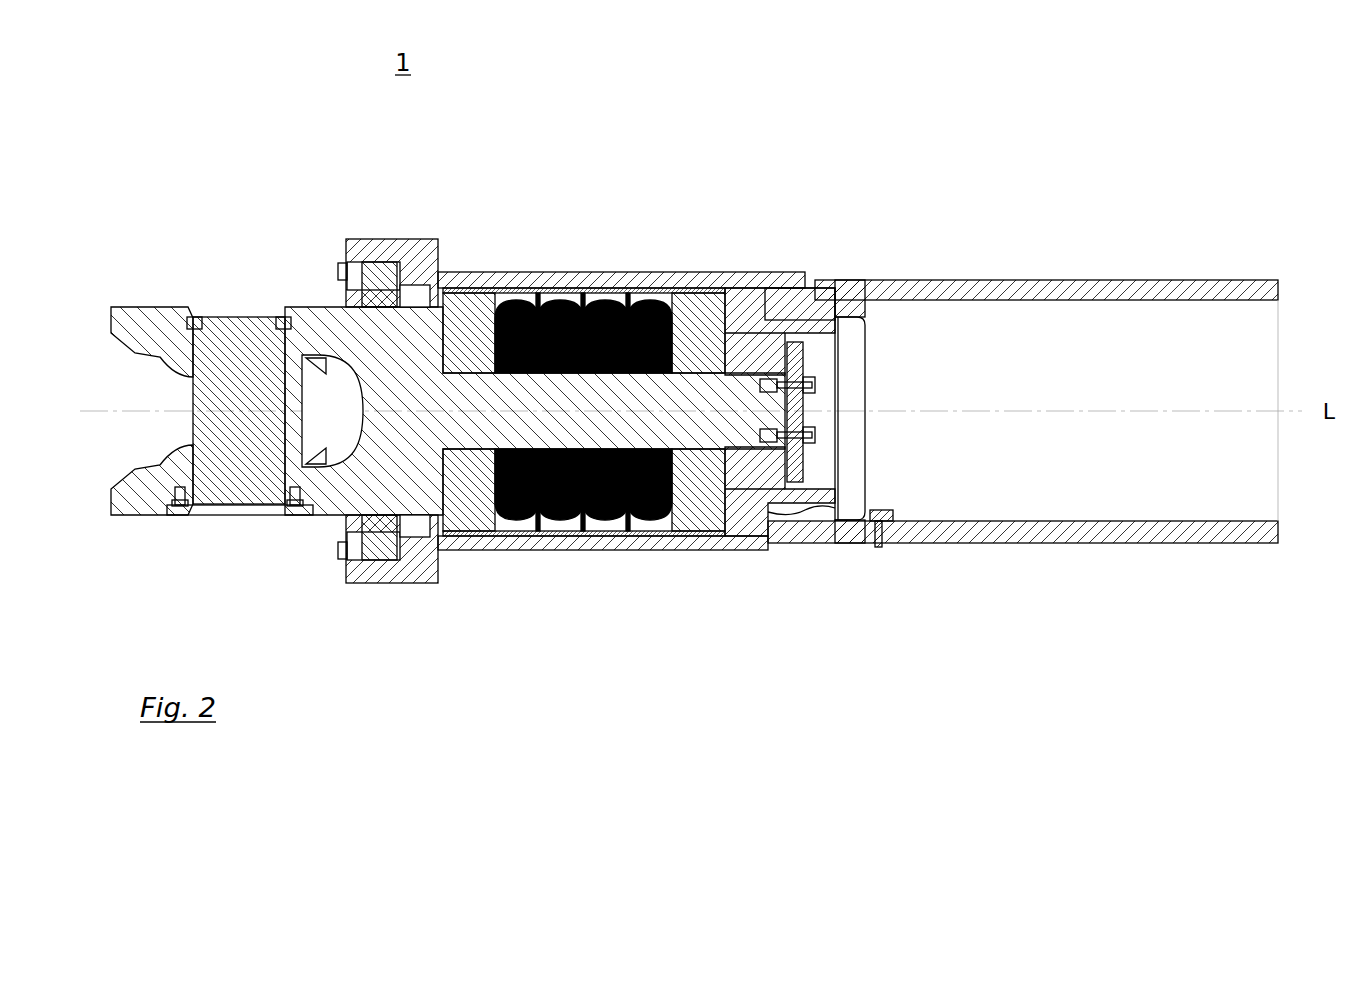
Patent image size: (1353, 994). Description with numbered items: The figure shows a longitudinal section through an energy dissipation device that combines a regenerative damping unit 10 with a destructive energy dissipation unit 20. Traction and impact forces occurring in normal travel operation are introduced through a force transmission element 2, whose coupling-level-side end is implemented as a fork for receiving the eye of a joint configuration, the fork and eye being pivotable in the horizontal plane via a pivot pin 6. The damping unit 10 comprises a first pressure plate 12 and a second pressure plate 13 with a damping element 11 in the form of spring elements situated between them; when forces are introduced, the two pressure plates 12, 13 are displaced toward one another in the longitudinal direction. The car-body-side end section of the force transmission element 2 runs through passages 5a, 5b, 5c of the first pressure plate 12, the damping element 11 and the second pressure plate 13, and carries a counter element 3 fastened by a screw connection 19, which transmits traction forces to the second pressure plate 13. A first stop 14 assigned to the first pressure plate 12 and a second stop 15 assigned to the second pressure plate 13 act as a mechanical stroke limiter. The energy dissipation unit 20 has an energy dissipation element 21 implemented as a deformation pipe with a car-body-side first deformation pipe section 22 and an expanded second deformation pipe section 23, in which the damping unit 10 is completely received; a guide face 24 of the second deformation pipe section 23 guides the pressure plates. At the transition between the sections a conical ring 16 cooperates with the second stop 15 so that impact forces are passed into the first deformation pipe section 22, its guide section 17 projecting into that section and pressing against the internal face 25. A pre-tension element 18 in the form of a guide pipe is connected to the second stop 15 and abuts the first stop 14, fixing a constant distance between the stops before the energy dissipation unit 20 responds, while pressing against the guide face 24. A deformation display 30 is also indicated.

The force transmission element 2 is at (508, 342).
The counter element 3 is at (858, 365).
The passage 5a is at (486, 471).
The passage 5b is at (590, 513).
The passage 5c is at (718, 471).
The pivot pin 6 is at (212, 342).
The damping unit 10 is at (637, 491).
The damping element 11 is at (590, 445).
The first pressure plate 12 is at (528, 395).
The second pressure plate 13 is at (749, 401).
The first stop 14 is at (453, 358).
The second stop 15 is at (818, 315).
The conical ring 16 is at (809, 610).
The guide section 17 is at (856, 344).
The pre-tension element 18 is at (610, 513).
The screw connection 19 is at (835, 513).
The energy dissipation unit 20 is at (808, 515).
The energy dissipation element 21 is at (858, 331).
The first deformation pipe section 22 is at (1023, 337).
The second deformation pipe section 23 is at (621, 411).
The guide face 24 is at (587, 510).
The internal face 25 is at (1023, 339).
The deformation display 30 is at (941, 603).